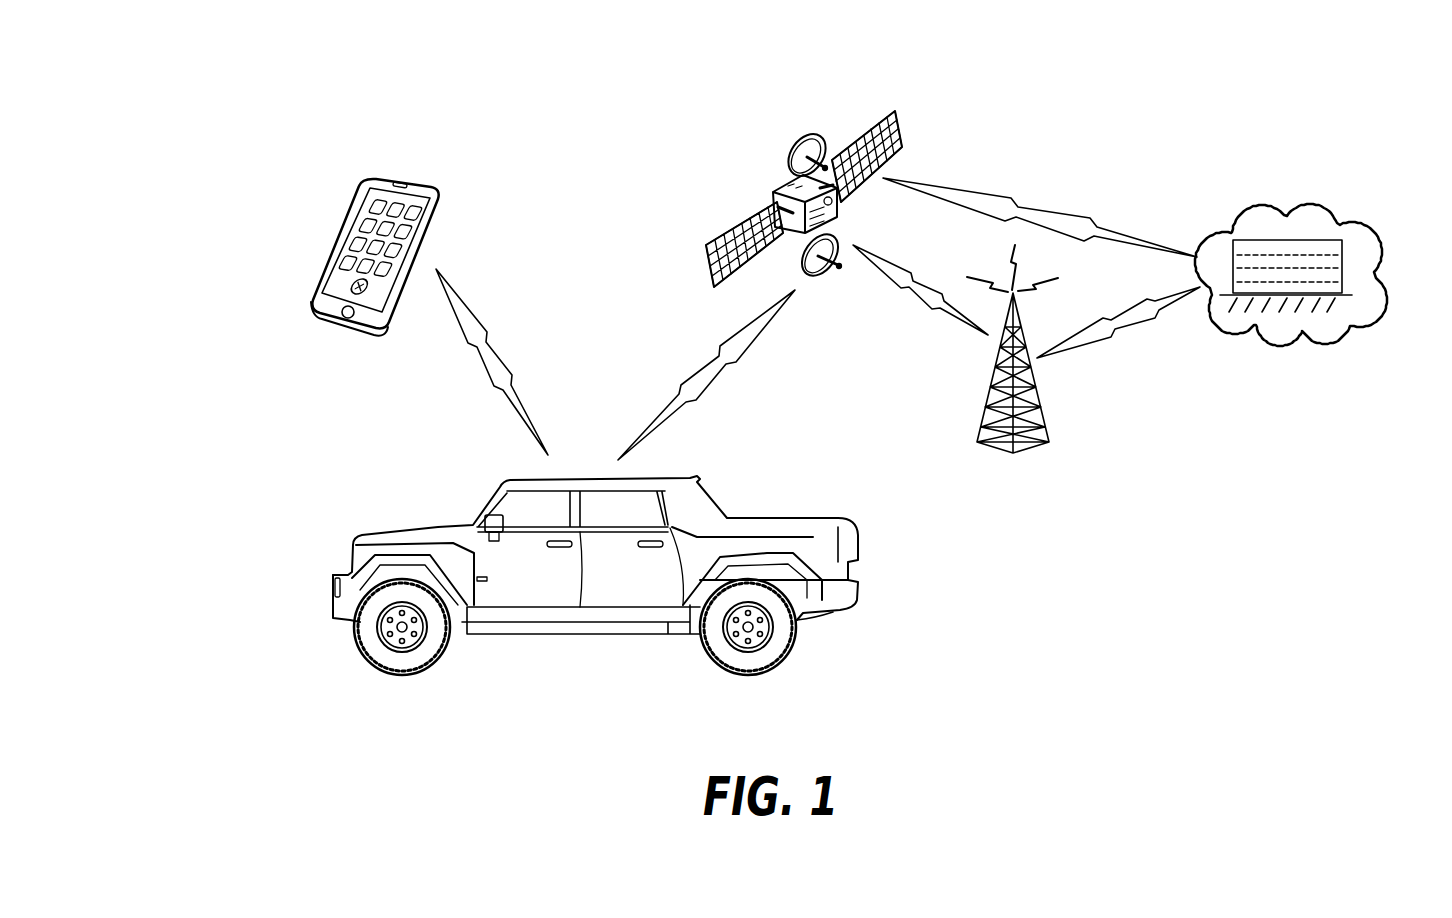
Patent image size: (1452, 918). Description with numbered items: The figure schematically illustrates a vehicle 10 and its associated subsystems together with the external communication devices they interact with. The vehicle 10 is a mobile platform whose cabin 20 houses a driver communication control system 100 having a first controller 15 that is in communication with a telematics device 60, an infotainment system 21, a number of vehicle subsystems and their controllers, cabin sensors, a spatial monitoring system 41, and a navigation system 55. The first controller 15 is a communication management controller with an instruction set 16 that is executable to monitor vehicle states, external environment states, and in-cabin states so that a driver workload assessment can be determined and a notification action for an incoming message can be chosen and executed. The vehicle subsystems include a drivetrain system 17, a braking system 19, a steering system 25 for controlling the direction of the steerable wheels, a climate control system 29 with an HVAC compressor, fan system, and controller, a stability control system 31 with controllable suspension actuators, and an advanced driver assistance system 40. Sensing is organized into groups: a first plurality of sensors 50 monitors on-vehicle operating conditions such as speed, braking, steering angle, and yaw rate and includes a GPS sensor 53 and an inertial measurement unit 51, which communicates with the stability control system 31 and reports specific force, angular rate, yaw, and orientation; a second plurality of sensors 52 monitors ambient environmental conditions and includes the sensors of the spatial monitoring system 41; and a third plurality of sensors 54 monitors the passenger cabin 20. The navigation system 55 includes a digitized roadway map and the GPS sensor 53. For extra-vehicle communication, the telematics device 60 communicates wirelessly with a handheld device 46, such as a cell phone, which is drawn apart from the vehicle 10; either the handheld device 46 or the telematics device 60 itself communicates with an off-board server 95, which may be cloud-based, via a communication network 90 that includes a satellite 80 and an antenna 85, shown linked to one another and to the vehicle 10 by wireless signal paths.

The vehicle 10 is at (355, 505).
The handheld device 46 is at (387, 182).
The satellite 80 is at (815, 257).
The antenna 85 is at (1033, 378).
The communication network 90 is at (1037, 255).
The off-board server 95 is at (1349, 258).
The first controller 15 is at (123, 720).
The instruction set 16 is at (487, 550).
The drivetrain system 17 is at (471, 564).
The braking system 19 is at (487, 564).
The vehicle cabin 20 is at (471, 572).
The infotainment system 21 is at (487, 572).
The steering system 25 is at (471, 572).
The climate control system 29 is at (487, 572).
The stability control system 31 is at (471, 572).
The advanced driver assistance system 40 is at (487, 572).
The spatial monitoring system 41 is at (471, 572).
The first plurality of sensors 50 is at (487, 572).
The inertial measurement unit 51 is at (471, 572).
The second plurality of sensors 52 is at (487, 572).
The GPS sensor 53 is at (471, 572).
The third plurality of sensors 54 is at (487, 572).
The navigation system 55 is at (471, 575).
The telematics device 60 is at (487, 575).
The driver communication control system 100 is at (480, 590).